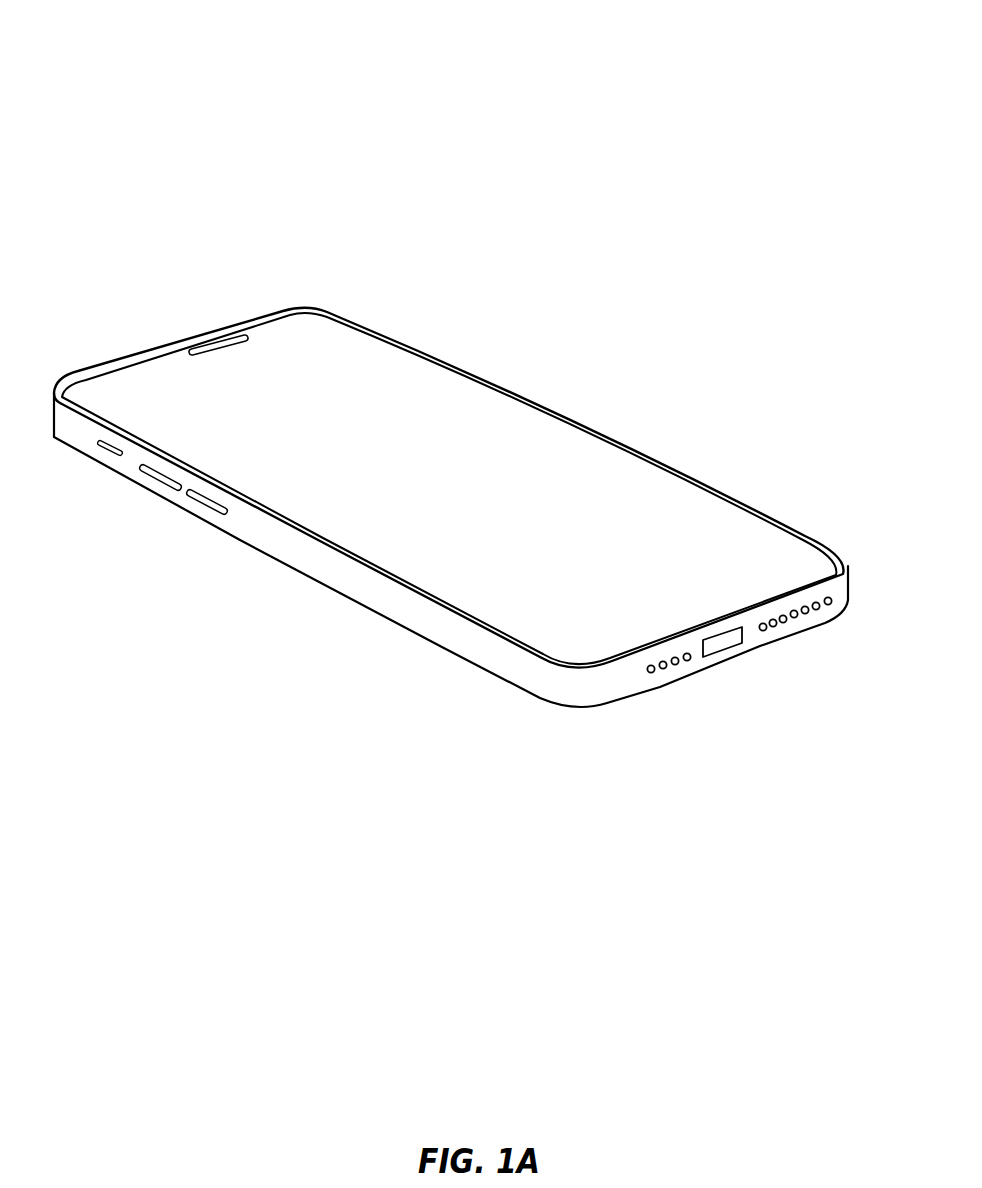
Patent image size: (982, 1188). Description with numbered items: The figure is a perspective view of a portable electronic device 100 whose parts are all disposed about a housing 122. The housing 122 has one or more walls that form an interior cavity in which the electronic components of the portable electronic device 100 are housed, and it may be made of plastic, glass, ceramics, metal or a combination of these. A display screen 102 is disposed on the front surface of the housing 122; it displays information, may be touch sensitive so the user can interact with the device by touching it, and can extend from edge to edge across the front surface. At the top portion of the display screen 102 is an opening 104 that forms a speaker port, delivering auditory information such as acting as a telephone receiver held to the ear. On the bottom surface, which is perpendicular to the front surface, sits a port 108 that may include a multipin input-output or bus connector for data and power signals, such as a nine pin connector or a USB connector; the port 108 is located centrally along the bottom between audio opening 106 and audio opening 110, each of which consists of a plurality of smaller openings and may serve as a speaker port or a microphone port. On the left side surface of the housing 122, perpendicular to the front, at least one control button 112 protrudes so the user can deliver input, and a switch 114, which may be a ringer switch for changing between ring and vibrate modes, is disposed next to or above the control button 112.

The portable electronic device 100 is at (110, 80).
The display screen 102 is at (449, 488).
The opening 104 is at (242, 331).
The audio opening 106 is at (685, 667).
The port 108 is at (740, 643).
The audio opening 110 is at (780, 627).
The control button 112 is at (213, 508).
The switch 114 is at (100, 447).
The housing 122 is at (410, 610).